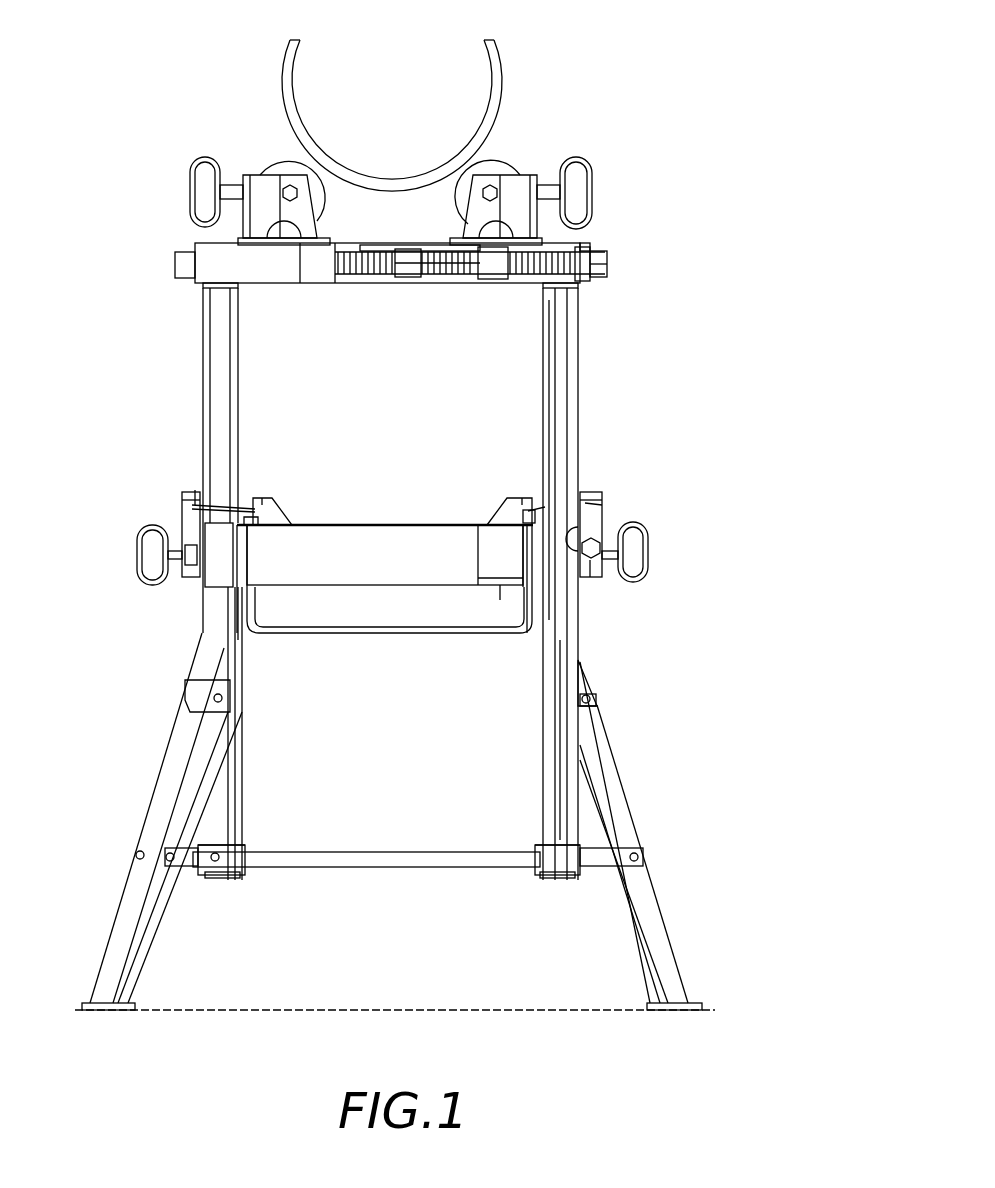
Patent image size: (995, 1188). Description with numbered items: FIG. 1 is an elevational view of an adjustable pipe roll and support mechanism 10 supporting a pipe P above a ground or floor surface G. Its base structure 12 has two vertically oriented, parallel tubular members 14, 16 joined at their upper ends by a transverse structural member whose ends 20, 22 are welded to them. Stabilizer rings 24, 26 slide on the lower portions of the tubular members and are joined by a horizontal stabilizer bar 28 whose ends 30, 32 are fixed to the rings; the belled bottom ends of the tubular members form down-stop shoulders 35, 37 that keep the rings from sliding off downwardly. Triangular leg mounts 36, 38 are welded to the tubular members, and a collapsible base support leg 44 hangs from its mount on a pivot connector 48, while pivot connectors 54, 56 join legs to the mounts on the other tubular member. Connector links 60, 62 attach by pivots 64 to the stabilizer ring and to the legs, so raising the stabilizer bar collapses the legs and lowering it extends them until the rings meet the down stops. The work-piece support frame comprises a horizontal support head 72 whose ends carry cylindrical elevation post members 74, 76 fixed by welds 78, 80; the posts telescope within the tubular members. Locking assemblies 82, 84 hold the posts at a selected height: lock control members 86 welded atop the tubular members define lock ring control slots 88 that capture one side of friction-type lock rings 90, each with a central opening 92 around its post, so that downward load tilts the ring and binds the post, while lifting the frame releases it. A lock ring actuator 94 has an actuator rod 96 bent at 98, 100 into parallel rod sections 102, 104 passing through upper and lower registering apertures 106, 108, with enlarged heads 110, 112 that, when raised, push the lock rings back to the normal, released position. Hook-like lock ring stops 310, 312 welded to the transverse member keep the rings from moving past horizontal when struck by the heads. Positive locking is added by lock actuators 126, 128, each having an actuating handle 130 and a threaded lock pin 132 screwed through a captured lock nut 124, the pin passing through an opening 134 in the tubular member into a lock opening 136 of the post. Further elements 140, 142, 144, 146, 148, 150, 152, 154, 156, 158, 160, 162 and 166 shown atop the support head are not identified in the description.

The pipe P is at (498, 92).
The adjustable pipe roll and support mechanism 10 is at (605, 192).
The base structure 12 is at (200, 632).
The tubular member 14 is at (243, 755).
The tubular member 16 is at (540, 745).
The end of transverse structural member 20 is at (205, 570).
The end of transverse structural member 22 is at (582, 628).
The stabilizer ring 24 is at (245, 848).
The stabilizer ring 26 is at (537, 848).
The stabilizer bar 28 is at (373, 867).
The end of stabilizer bar 30 is at (245, 870).
The end of stabilizer bar 32 is at (535, 868).
The down-stop shoulder 35 is at (240, 878).
The leg mount 36 is at (190, 680).
The down-stop shoulder 37 is at (552, 876).
The leg mount 38 is at (592, 675).
The base support leg 44 is at (170, 758).
The pivot connector 48 is at (222, 698).
The pivot connector 54 is at (597, 702).
The pivot connector 56 is at (165, 860).
The connector link 60 is at (138, 850).
The connector link 62 is at (185, 868).
The pivot 64 is at (218, 876).
The support head 72 is at (272, 283).
The cylindrical elevation post member 74 is at (203, 338).
The cylindrical elevation post member 76 is at (578, 313).
The weld 78 is at (205, 286).
The weld 80 is at (545, 290).
The locking assembly 82 is at (175, 485).
The locking assembly 84 is at (605, 485).
The lock control member 86 is at (182, 505).
The lock ring control slot 88 is at (195, 490).
The lock ring 90 is at (215, 505).
The central opening 92 is at (540, 505).
The lock ring actuator 94 is at (435, 633).
The actuator rod 96 is at (350, 633).
The bend 98 is at (252, 620).
The bend 100 is at (527, 633).
The actuator rod section 102 is at (262, 600).
The actuator rod section 104 is at (512, 633).
The upper registering aperture 106 is at (485, 540).
The lower registering aperture 108 is at (518, 592).
The enlarged head 110 is at (258, 528).
The enlarged head 112 is at (525, 510).
The lock nut member 124 is at (603, 545).
The lock actuator 126 is at (137, 548).
The lock actuator 128 is at (648, 545).
The actuating handle 130 is at (648, 560).
The lock pin 132 is at (610, 565).
The opening 134 is at (583, 560).
The lock opening 136 is at (602, 505).
The top beam assembly 140 is at (195, 248).
The beam collar 142 is at (596, 252).
The end nut bore 144 is at (607, 262).
The threaded rod axis 146 is at (415, 280).
The rod guide 148 is at (400, 252).
The center block 150 is at (395, 280).
The threaded rod 152 is at (345, 280).
The left roller assembly 154 is at (268, 165).
The adjusting nut 156 is at (490, 280).
The left end nut 158 is at (175, 265).
The right end nut 160 is at (607, 274).
The right collar 162 is at (590, 248).
The right roller assembly 166 is at (508, 160).
The lock ring stop 310 is at (280, 498).
The lock ring stop 312 is at (490, 522).
The ground or floor surface G is at (512, 1008).